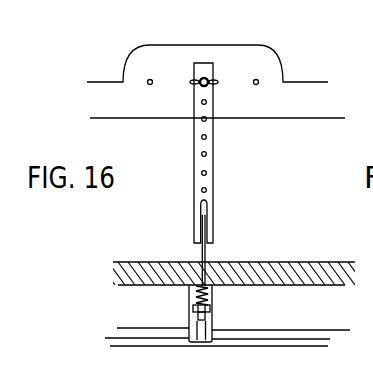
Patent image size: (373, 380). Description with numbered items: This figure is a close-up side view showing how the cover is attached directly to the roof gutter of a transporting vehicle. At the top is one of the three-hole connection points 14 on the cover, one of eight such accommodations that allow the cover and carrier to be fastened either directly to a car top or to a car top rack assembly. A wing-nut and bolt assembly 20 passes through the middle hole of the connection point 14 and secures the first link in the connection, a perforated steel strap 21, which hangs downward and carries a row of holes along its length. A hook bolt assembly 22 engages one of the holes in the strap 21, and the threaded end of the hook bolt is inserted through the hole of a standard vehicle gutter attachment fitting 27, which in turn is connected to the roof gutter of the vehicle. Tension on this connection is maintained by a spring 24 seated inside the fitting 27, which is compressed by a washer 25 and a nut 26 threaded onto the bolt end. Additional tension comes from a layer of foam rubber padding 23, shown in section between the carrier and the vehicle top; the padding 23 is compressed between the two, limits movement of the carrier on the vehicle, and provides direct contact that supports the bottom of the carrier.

The three-hole accommodation 14 is at (216, 81).
The wing-nut and bolt assembly 20 is at (218, 76).
The perforated steel strap 21 is at (215, 163).
The hook bolt assembly 22 is at (209, 252).
The foam rubber padding 23 is at (302, 261).
The spring 24 is at (222, 297).
The washer 25 is at (222, 303).
The nut 26 is at (222, 311).
The vehicle gutter attachment fitting 27 is at (216, 320).